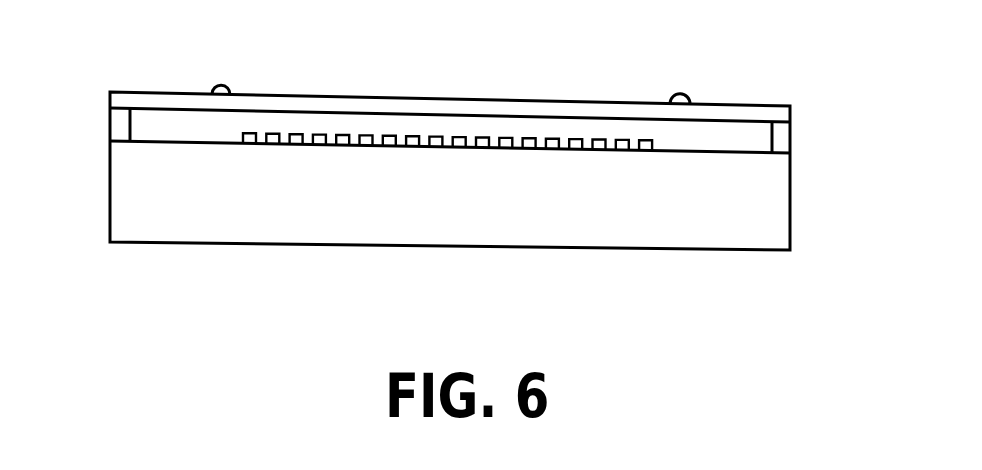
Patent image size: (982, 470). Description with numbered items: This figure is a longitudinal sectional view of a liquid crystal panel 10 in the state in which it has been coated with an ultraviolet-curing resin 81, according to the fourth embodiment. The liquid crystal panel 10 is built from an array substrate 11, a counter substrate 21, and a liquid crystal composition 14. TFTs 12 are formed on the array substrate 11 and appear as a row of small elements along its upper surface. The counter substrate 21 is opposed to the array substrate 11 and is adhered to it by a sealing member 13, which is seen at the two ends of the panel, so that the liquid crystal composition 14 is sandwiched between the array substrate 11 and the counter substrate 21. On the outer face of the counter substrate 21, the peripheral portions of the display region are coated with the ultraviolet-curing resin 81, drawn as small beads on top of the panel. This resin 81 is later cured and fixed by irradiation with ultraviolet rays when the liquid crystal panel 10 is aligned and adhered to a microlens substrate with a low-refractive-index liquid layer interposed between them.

The liquid crystal panel 10 is at (108, 90).
The array substrate 11 is at (783, 208).
The TFTs 12 is at (393, 147).
The sealing member 13 is at (783, 137).
The liquid crystal composition 14 is at (673, 137).
The counter substrate 21 is at (772, 105).
The ultraviolet-curing resin 81 is at (680, 95).